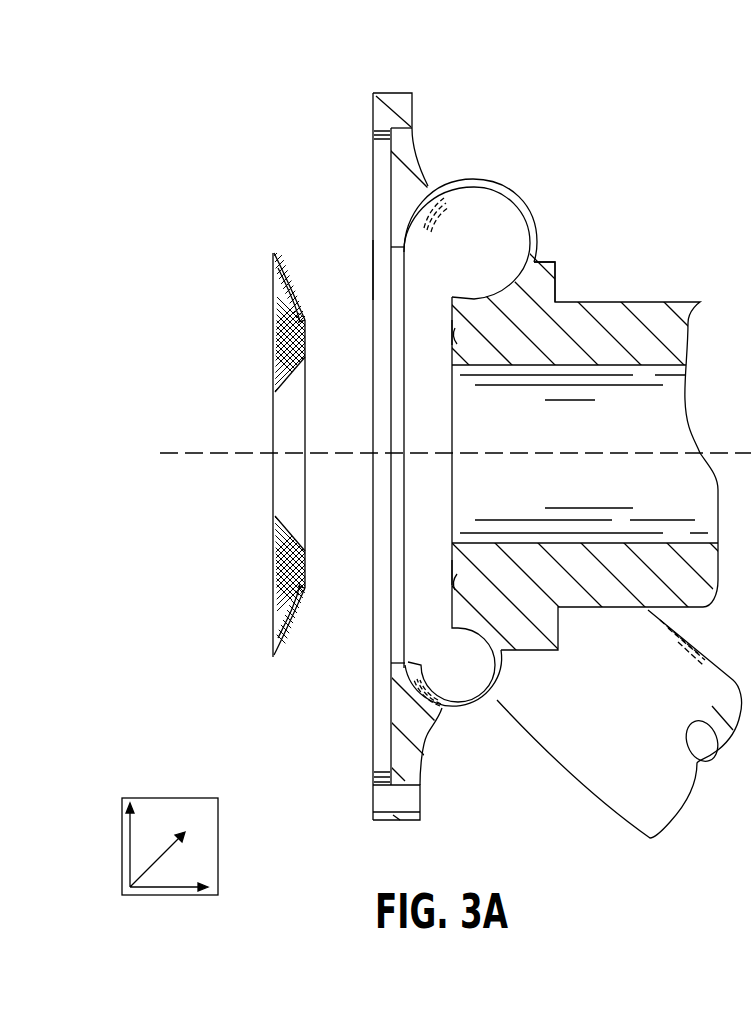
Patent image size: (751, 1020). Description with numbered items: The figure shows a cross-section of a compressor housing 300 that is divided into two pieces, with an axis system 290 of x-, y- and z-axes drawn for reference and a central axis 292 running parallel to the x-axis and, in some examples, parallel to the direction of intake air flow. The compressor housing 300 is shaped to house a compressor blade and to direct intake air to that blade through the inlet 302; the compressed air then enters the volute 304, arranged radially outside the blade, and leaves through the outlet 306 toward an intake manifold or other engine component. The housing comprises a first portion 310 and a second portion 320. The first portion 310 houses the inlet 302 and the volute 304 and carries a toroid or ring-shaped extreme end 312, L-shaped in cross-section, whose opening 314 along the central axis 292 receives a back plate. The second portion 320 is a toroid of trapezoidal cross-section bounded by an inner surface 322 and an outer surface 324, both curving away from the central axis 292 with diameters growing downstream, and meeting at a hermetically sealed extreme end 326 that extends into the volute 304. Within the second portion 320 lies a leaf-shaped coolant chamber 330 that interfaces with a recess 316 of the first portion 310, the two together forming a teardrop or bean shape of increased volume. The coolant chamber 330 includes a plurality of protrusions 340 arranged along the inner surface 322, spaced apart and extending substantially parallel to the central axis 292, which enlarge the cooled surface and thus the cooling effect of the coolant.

The compressor housing 300 is at (598, 41).
The inlet 302 is at (597, 498).
The volute 304 is at (478, 254).
The outlet 306 is at (633, 716).
The first portion 310 is at (545, 262).
The extreme end 312 is at (373, 122).
The opening 314 is at (368, 265).
The recess 316 is at (457, 338).
The second portion 320 is at (253, 352).
The inner surface 322 is at (274, 388).
The outer surface 324 is at (305, 637).
The extreme end 326 is at (273, 657).
The coolant chamber 330 is at (303, 326).
The plurality of protrusions 340 is at (303, 331).
The axis system 290 is at (218, 820).
The central axis 292 is at (221, 451).